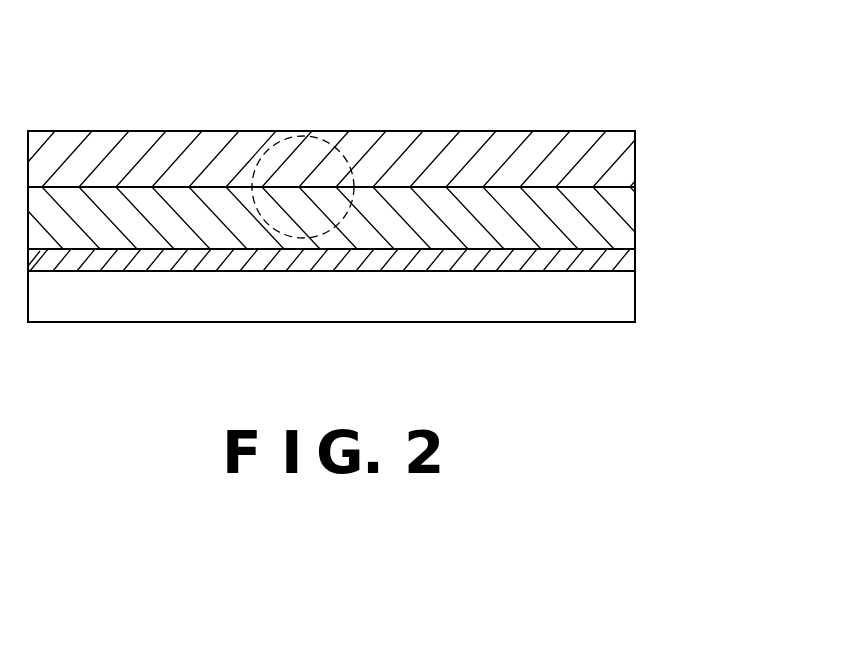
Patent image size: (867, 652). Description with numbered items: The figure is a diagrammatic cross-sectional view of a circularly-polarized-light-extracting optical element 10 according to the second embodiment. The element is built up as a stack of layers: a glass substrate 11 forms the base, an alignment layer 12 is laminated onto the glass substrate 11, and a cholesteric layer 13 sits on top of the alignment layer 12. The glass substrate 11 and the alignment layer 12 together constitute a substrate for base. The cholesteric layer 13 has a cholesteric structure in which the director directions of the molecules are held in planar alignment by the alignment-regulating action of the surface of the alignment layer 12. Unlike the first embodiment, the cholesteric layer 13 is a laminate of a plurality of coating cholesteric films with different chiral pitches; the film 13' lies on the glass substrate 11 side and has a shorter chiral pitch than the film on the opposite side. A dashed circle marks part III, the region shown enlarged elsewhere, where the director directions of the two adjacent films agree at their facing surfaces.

The circularly-polarized-light-extracting optical element 10 is at (637, 107).
The glass substrate 11 is at (617, 292).
The alignment layer 12 is at (632, 255).
The cholesteric layer 13 is at (418, 190).
The coating cholesteric film 13' is at (382, 216).
The part III is at (332, 136).